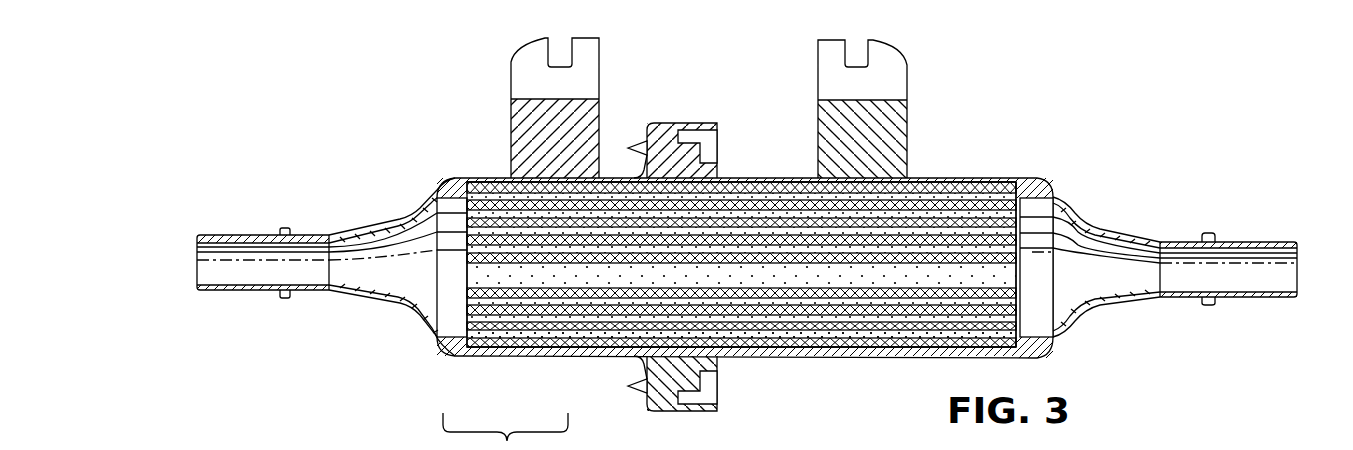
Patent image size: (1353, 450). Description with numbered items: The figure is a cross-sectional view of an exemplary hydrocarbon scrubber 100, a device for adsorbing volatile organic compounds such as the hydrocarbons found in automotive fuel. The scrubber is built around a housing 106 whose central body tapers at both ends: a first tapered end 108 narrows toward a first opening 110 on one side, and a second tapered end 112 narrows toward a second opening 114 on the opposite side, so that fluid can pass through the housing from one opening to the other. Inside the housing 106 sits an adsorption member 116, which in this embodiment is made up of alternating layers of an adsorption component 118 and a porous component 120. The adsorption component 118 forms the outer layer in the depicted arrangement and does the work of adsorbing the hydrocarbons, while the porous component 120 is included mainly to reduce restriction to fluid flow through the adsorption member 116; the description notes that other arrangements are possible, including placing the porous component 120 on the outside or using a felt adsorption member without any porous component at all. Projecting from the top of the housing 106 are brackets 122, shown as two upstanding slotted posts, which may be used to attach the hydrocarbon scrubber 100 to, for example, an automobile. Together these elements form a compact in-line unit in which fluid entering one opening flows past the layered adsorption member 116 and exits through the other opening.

The hydrocarbon scrubber 100 is at (302, 90).
The housing 106 is at (990, 176).
The first tapered end 108 is at (1072, 212).
The first opening 110 is at (1237, 262).
The second tapered end 112 is at (437, 187).
The second opening 114 is at (225, 240).
The adsorption member 116 is at (845, 443).
The adsorption component 118 is at (488, 347).
The porous component 120 is at (547, 335).
The bracket 122 is at (897, 67).